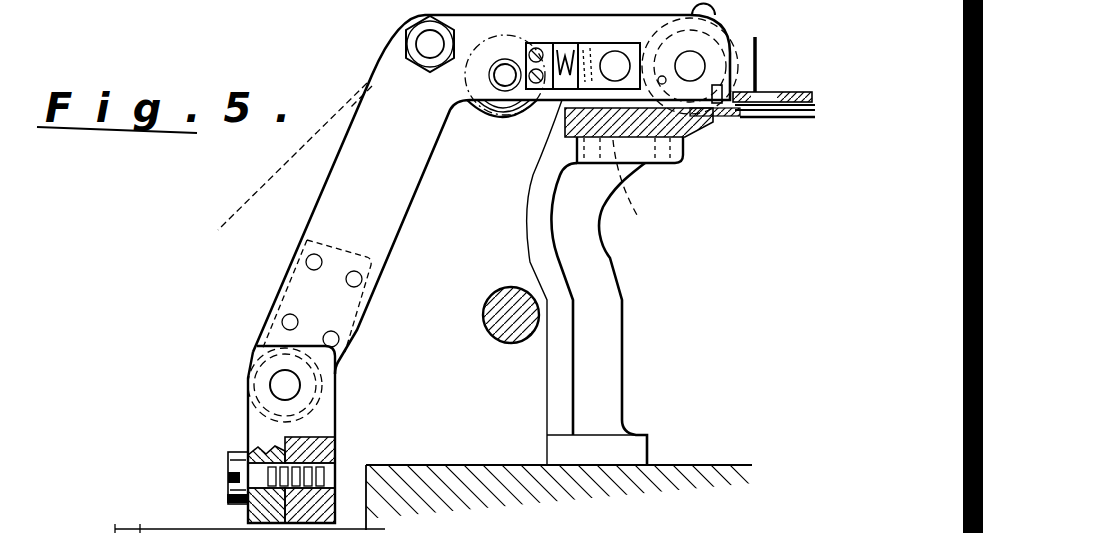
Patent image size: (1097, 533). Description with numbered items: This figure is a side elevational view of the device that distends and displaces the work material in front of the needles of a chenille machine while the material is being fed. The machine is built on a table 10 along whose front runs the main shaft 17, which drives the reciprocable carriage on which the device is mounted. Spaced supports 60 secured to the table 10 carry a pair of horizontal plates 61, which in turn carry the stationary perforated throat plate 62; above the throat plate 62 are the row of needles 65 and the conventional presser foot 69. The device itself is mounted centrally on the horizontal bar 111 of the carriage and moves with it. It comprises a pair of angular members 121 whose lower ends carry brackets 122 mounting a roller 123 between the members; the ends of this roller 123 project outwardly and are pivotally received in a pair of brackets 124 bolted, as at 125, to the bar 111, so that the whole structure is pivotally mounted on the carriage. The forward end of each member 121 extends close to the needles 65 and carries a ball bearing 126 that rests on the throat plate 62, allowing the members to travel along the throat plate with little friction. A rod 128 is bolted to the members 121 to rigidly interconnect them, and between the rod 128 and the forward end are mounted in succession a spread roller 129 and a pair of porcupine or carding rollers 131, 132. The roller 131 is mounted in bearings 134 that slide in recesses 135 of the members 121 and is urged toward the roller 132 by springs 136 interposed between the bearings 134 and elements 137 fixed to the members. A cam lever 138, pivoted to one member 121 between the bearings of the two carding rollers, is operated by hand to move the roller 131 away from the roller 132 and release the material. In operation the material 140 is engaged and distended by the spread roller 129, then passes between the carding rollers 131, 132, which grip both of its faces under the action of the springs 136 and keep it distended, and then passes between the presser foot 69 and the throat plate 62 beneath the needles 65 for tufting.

The table 10 is at (483, 471).
The main shaft 17 is at (495, 345).
The supports 60 is at (610, 303).
The horizontal plates 61 is at (632, 150).
The throat plate 62 is at (690, 160).
The needles 65 is at (758, 60).
The presser foot 69 is at (791, 92).
The horizontal bar 111 is at (322, 447).
The angular members 121 is at (322, 222).
The brackets 122 is at (300, 287).
The roller 123 is at (262, 366).
The brackets 124 is at (258, 430).
The bolt 125 is at (232, 458).
The ball bearing 126 is at (722, 108).
The rod 128 is at (425, 43).
The spread roller 129 is at (497, 113).
The carding roller 131 is at (642, 188).
The carding roller 132 is at (735, 41).
The bearings 134 is at (560, 89).
The recesses 135 is at (570, 89).
The springs 136 is at (550, 89).
The elements 137 is at (507, 101).
The cam lever 138 is at (715, 14).
The material 140 is at (265, 185).